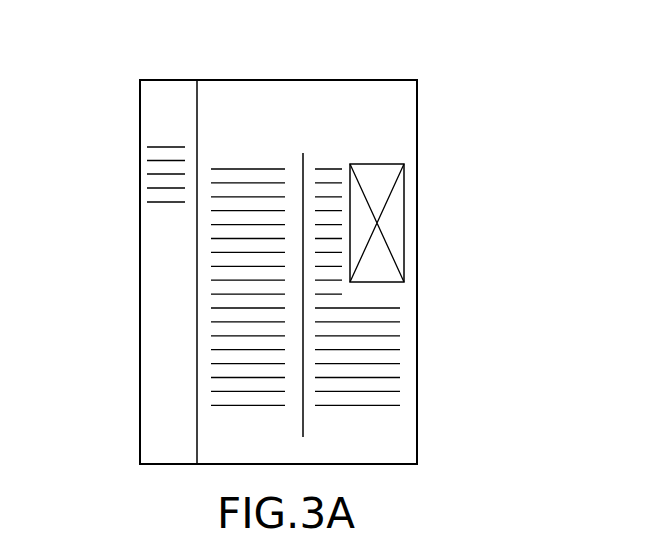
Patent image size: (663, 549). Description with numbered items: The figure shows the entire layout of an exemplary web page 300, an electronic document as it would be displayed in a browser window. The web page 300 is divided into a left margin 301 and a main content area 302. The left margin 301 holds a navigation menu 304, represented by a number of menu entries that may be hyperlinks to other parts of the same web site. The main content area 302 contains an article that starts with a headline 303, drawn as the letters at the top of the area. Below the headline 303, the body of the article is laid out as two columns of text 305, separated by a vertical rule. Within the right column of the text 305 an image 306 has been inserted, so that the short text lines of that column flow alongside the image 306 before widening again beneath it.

The web page 300 is at (417, 135).
The left margin 301 is at (163, 80).
The main content area 302 is at (378, 80).
The headline 303 is at (309, 112).
The navigation menu 304 is at (155, 143).
The body text columns 305 is at (230, 414).
The image 306 is at (405, 213).